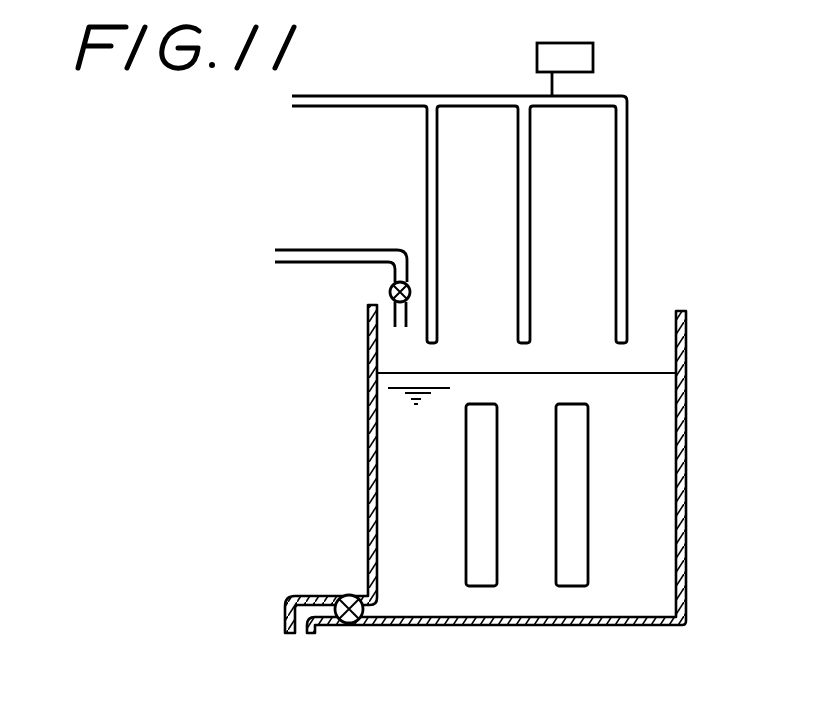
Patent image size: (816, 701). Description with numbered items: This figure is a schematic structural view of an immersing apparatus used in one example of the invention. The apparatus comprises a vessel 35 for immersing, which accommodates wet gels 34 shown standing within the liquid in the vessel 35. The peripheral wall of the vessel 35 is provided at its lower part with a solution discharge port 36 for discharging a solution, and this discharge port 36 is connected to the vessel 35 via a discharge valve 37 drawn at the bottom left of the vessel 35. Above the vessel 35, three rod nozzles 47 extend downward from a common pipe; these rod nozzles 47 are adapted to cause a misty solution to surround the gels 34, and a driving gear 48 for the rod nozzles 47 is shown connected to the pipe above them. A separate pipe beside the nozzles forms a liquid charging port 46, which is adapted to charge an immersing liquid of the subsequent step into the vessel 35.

The wet gel 34 is at (572, 570).
The vessel 35 is at (685, 333).
The discharge port 36 is at (315, 607).
The discharge valve 37 is at (348, 595).
The liquid charging port 46 is at (360, 257).
The rod nozzles 47 is at (623, 232).
The driving gear 48 is at (548, 57).